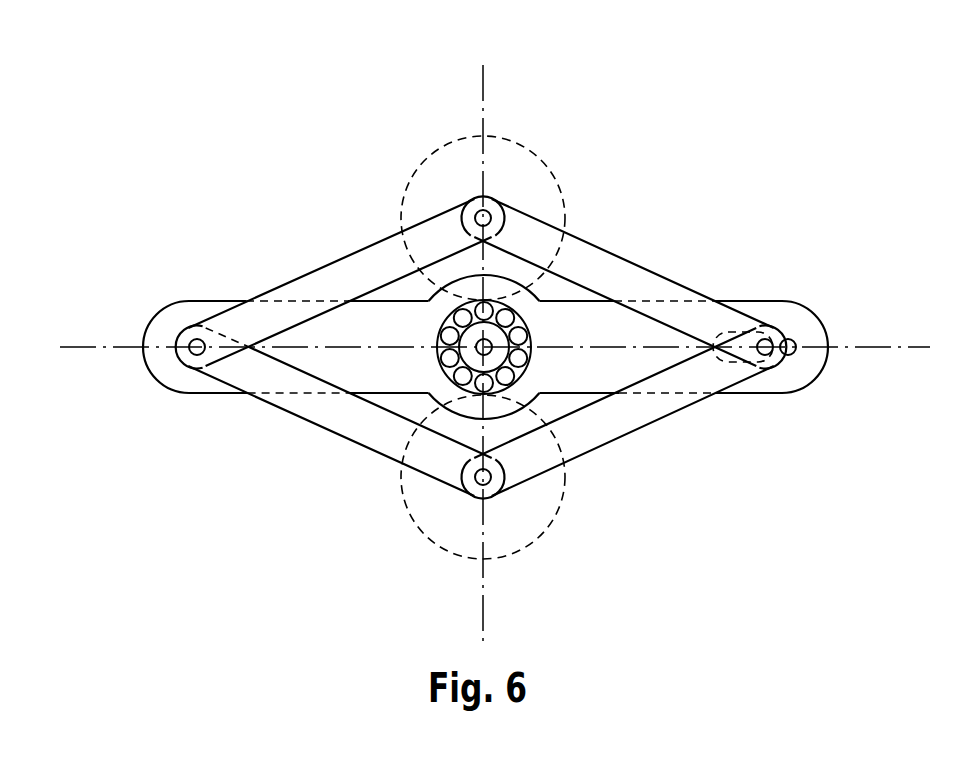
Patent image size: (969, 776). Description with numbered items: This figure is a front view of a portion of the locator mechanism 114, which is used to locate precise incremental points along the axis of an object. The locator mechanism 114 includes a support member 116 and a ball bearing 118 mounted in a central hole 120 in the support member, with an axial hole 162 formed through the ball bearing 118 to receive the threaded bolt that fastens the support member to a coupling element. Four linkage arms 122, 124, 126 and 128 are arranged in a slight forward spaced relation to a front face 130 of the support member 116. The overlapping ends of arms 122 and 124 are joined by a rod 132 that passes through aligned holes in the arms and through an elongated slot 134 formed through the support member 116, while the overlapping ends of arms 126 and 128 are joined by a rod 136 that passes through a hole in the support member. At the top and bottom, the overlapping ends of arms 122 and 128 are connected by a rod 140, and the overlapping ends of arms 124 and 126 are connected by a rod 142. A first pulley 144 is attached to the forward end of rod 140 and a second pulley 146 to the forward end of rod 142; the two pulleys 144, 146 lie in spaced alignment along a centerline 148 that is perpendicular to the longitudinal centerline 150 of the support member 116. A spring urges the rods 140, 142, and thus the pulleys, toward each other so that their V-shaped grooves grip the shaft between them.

The locator mechanism 114 is at (762, 97).
The support member 116 is at (745, 299).
The ball bearing 118 is at (500, 332).
The central hole 120 is at (460, 326).
The linkage arm 122 is at (610, 275).
The linkage arm 124 is at (628, 425).
The linkage arm 126 is at (300, 407).
The linkage arm 128 is at (327, 273).
The front face 130 is at (673, 350).
The rod 132 is at (773, 358).
The elongated slot 134 is at (797, 350).
The rod 136 is at (193, 347).
The rod 140 is at (491, 214).
The rod 142 is at (490, 483).
The first pulley 144 is at (462, 137).
The second pulley 146 is at (423, 528).
The centerline 148 is at (482, 82).
The longitudinal centerline 150 is at (95, 345).
The axial hole 162 is at (525, 395).